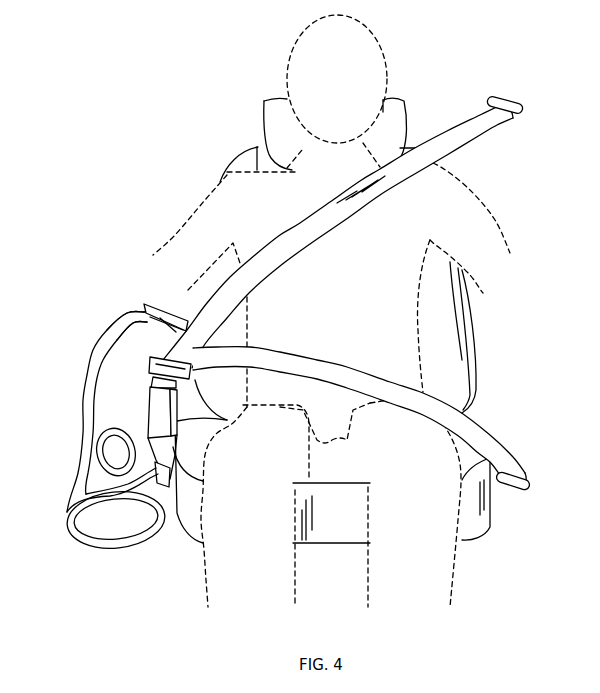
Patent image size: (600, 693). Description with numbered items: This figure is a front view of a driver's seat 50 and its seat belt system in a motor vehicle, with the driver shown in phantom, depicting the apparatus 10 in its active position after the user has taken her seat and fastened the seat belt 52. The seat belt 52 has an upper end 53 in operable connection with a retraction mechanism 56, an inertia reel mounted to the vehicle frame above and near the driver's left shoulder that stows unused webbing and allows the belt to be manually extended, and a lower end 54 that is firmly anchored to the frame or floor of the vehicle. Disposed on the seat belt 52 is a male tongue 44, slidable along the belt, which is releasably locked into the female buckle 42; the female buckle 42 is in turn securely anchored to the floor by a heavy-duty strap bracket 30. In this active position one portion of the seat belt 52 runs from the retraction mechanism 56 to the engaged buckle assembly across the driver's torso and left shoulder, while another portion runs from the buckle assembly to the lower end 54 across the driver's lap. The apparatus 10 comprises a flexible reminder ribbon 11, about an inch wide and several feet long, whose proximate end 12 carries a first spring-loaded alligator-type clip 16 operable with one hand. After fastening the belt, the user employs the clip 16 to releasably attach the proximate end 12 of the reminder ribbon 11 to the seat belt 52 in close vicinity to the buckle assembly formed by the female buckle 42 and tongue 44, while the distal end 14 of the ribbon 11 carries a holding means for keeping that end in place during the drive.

The apparatus 10 is at (96, 274).
The reminder ribbon 11 is at (100, 330).
The proximate end of the ribbon 12 is at (128, 311).
The distal end of the ribbon 14 is at (105, 457).
The first spring-loaded clip 16 is at (147, 305).
The strap bracket 30 is at (165, 486).
The female buckle 42 is at (152, 411).
The tongue 44 is at (160, 374).
The driver's seat 50 is at (247, 163).
The seat belt 52 is at (453, 140).
The upper end of the seat belt 53 is at (470, 125).
The lower end of the seat belt 54 is at (515, 490).
The retraction mechanism 56 is at (508, 100).